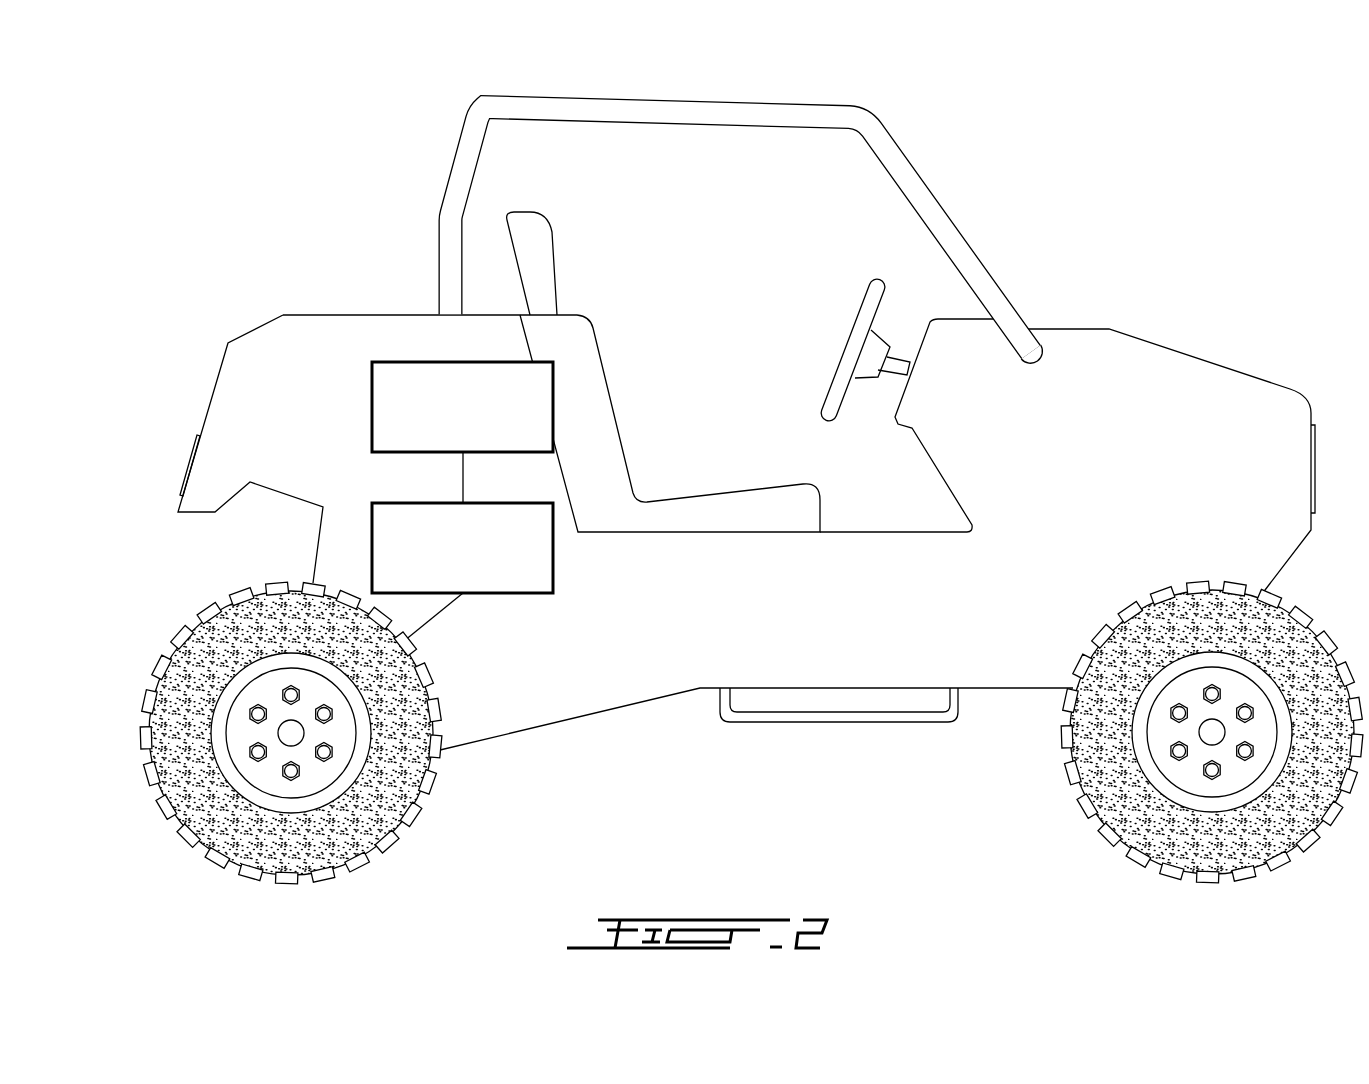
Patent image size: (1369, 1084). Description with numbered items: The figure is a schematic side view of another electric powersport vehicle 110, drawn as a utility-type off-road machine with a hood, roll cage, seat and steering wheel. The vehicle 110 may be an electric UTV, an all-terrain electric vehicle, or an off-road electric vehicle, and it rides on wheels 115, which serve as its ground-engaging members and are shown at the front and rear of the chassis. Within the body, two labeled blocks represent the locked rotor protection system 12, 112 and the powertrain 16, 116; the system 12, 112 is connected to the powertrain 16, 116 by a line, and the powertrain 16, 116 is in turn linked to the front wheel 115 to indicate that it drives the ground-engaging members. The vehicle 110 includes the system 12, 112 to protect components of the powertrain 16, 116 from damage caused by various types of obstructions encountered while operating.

The electric vehicle 110 is at (188, 160).
The system 12 is at (402, 432).
The system 112 is at (372, 405).
The powertrain 16 is at (499, 618).
The powertrain 116 is at (553, 577).
The wheels 115 is at (168, 705).